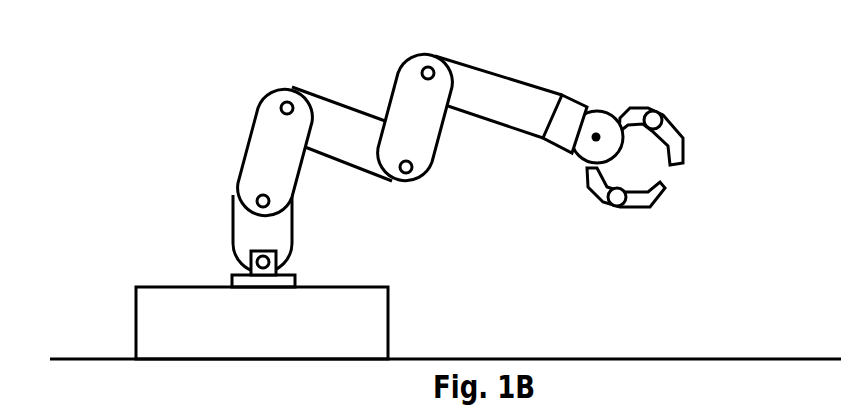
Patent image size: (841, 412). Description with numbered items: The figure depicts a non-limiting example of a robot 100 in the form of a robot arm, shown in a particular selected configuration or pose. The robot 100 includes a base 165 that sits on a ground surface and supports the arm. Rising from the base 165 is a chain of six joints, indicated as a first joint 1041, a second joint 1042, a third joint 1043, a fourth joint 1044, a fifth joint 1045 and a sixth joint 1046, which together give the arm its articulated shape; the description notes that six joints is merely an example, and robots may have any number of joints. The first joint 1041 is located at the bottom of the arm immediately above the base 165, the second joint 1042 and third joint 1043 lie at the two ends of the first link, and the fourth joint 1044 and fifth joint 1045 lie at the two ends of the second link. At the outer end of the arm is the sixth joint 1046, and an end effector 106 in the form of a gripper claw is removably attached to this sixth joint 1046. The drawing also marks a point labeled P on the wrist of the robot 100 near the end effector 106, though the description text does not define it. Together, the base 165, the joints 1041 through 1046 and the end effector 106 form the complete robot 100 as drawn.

The robot 100 is at (100, 114).
The first joint 1041 is at (255, 262).
The second joint 1042 is at (257, 201).
The third joint 1043 is at (285, 100).
The fourth joint 1044 is at (407, 174).
The fifth joint 1045 is at (427, 67).
The sixth joint 1046 is at (573, 93).
The end effector 106 is at (697, 110).
The base 165 is at (333, 287).
The tool center point P is at (597, 133).